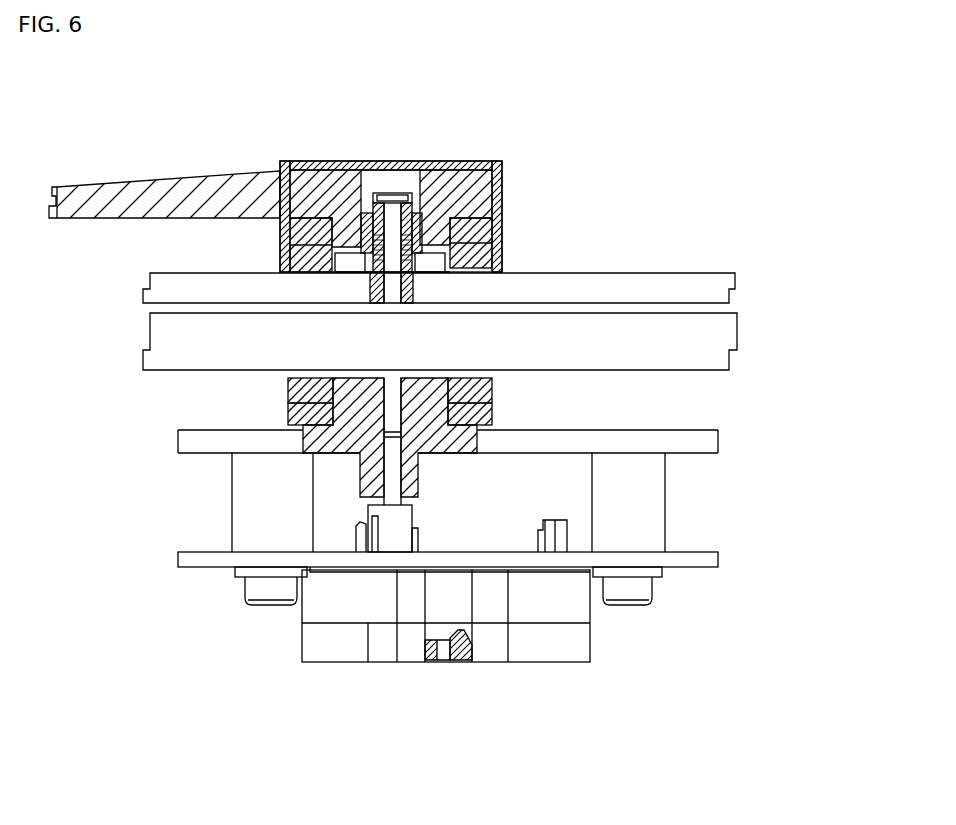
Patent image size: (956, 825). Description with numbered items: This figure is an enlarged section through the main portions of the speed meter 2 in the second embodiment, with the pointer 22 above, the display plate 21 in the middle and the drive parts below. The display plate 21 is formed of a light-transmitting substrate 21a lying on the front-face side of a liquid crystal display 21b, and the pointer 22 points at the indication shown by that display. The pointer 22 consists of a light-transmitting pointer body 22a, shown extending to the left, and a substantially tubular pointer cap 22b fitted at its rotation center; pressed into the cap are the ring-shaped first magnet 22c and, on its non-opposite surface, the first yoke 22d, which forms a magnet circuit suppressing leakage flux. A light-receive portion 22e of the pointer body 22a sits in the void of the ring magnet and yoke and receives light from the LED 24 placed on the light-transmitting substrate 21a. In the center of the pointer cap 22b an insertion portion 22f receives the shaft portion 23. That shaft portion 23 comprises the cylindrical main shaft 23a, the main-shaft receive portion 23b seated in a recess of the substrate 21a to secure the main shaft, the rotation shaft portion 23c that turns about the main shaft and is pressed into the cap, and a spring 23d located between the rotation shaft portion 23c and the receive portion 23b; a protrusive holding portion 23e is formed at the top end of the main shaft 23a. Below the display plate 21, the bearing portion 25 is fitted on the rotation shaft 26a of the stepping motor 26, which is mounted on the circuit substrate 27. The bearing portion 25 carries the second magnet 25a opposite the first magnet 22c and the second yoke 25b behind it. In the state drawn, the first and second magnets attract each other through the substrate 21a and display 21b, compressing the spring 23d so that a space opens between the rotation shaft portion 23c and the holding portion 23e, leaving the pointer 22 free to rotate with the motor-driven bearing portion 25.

The speed meter 2 is at (602, 140).
The display plate 21 is at (742, 308).
The light-transmitting substrate 21a is at (688, 275).
The liquid crystal display 21b is at (707, 357).
The pointer 22 is at (270, 160).
The pointer body 22a is at (163, 190).
The pointer cap 22b is at (338, 160).
The first magnet 22c is at (466, 272).
The first yoke 22d is at (450, 237).
The light-receive portion 22e is at (443, 277).
The insertion portion 22f is at (404, 195).
The shaft portion 23 is at (363, 277).
The main shaft 23a is at (393, 222).
The main-shaft receive portion 23b is at (377, 278).
The rotation shaft portion 23c is at (418, 205).
The spring 23d is at (405, 278).
The holding portion 23e is at (383, 192).
The LED 24 is at (432, 270).
The bearing portion 25 is at (318, 438).
The second magnet 25a is at (492, 397).
The second yoke 25b is at (492, 417).
The stepping motor 26 is at (550, 662).
The rotation shaft 26a is at (390, 462).
The circuit substrate 27 is at (702, 568).